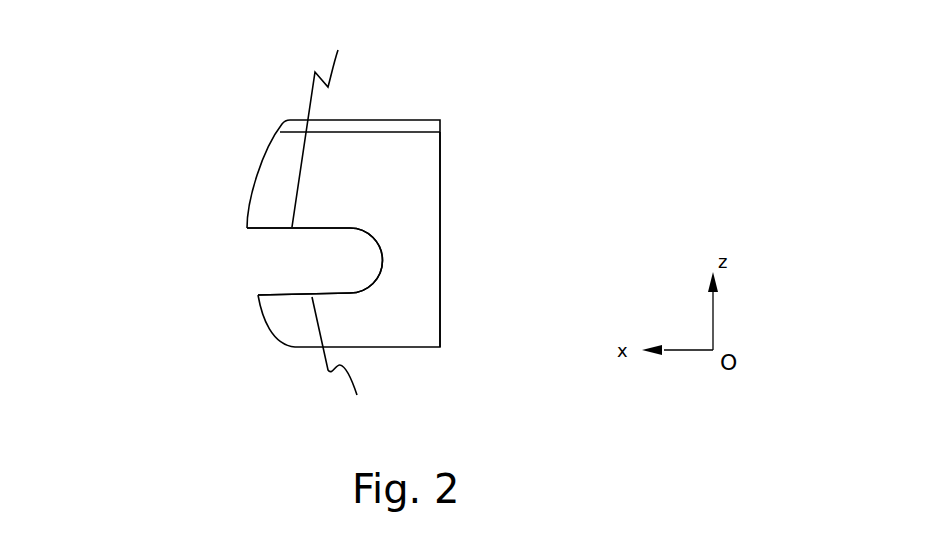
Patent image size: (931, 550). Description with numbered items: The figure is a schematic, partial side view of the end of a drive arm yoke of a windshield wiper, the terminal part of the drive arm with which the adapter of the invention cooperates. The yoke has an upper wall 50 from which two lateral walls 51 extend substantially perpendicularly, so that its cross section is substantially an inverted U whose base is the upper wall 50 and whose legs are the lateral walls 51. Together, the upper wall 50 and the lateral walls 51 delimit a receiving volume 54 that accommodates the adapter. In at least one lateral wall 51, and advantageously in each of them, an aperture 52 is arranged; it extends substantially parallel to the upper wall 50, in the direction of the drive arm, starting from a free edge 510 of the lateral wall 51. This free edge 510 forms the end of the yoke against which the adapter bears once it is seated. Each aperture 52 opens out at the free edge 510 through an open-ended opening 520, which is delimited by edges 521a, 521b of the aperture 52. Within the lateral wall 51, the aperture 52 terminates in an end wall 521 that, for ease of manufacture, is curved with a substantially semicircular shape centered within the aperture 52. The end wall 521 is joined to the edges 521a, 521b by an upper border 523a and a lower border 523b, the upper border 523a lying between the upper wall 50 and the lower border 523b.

The upper wall 50 is at (402, 120).
The lateral wall 51 is at (413, 288).
The aperture 52 is at (328, 260).
The receiving volume 54 is at (240, 180).
The free edge 510 is at (267, 157).
The open-ended opening 520 is at (258, 260).
The end wall 521 is at (383, 258).
The edge 521a is at (245, 227).
The edge 521b is at (258, 295).
The upper border 523a is at (329, 120).
The lower border 523b is at (357, 368).